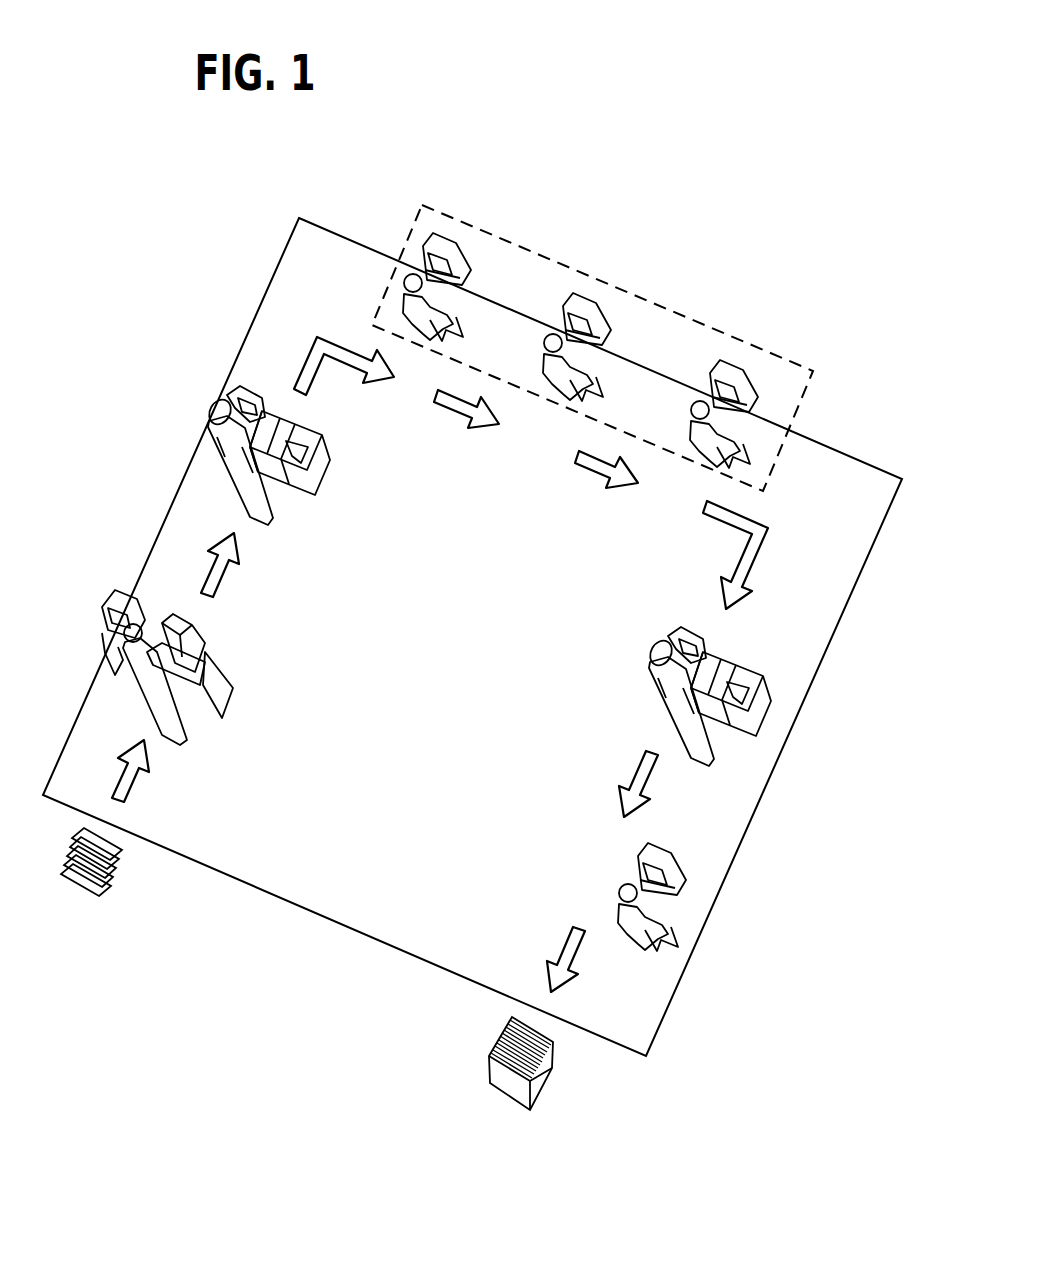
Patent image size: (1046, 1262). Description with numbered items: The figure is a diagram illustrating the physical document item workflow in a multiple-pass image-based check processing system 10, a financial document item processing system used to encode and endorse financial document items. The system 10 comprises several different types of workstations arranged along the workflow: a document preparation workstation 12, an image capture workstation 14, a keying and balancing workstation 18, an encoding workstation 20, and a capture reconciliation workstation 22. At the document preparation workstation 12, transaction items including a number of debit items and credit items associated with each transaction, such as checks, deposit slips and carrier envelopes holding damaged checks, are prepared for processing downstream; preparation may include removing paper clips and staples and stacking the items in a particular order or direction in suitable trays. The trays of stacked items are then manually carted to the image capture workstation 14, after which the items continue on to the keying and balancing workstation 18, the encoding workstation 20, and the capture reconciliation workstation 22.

The multiple-pass image-based check processing system 10 is at (628, 61).
The document preparation workstation 12 is at (115, 568).
The image capture workstation 14 is at (177, 373).
The keying and balancing workstation 18 is at (597, 281).
The encoding workstation 20 is at (740, 753).
The capture reconciliation workstation 22 is at (696, 911).